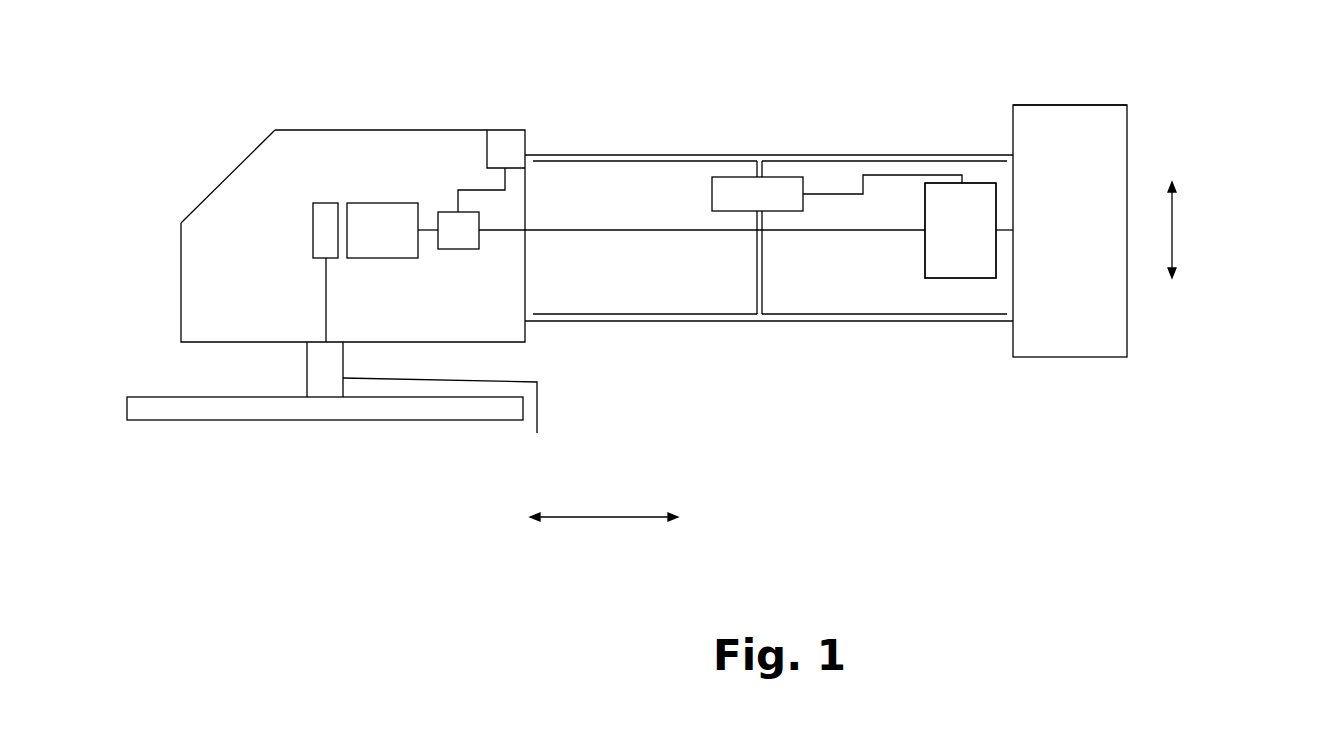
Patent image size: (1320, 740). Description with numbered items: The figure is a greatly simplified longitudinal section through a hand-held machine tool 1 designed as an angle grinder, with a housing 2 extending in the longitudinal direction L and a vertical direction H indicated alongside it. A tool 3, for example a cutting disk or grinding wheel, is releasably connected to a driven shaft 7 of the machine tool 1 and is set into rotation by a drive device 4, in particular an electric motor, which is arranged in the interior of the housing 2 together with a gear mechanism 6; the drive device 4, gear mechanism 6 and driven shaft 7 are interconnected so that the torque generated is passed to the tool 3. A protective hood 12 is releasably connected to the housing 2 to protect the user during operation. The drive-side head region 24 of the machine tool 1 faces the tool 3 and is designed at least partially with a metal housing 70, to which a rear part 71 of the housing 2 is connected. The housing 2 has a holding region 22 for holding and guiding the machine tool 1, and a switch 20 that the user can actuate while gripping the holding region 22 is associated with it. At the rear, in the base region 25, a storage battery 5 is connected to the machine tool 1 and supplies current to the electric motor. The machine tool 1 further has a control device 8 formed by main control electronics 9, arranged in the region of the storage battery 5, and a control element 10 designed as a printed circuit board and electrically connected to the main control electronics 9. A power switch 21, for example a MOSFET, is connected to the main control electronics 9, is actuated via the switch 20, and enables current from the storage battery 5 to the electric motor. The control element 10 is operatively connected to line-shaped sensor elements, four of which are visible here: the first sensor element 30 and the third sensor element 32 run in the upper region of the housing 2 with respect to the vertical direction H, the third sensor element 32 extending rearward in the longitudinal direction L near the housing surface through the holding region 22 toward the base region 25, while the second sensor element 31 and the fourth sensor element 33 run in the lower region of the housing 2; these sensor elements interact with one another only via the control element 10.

The hand-held machine tool 1 is at (1178, 76).
The housing 2 is at (911, 146).
The tool 3 is at (418, 408).
The drive device 4 is at (382, 215).
The storage battery 5 is at (1090, 328).
The gear mechanism 6 is at (318, 217).
The driven shaft 7 is at (327, 385).
The control device 8 is at (981, 176).
The main control electronics 9 is at (942, 263).
The control element 10 is at (773, 183).
The protective hood 12 is at (540, 407).
The switch 20 is at (507, 157).
The power switch 21 is at (445, 223).
The holding region 22 is at (610, 153).
The head region 24 is at (250, 175).
The base region 25 is at (1090, 133).
The first sensor element 30 is at (668, 158).
The second sensor element 31 is at (730, 315).
The third sensor element 32 is at (825, 158).
The fourth sensor element 33 is at (863, 317).
The metal housing 70 is at (217, 260).
The rear part 71 is at (725, 153).
The vertical direction H is at (1173, 228).
The longitudinal direction L is at (607, 520).